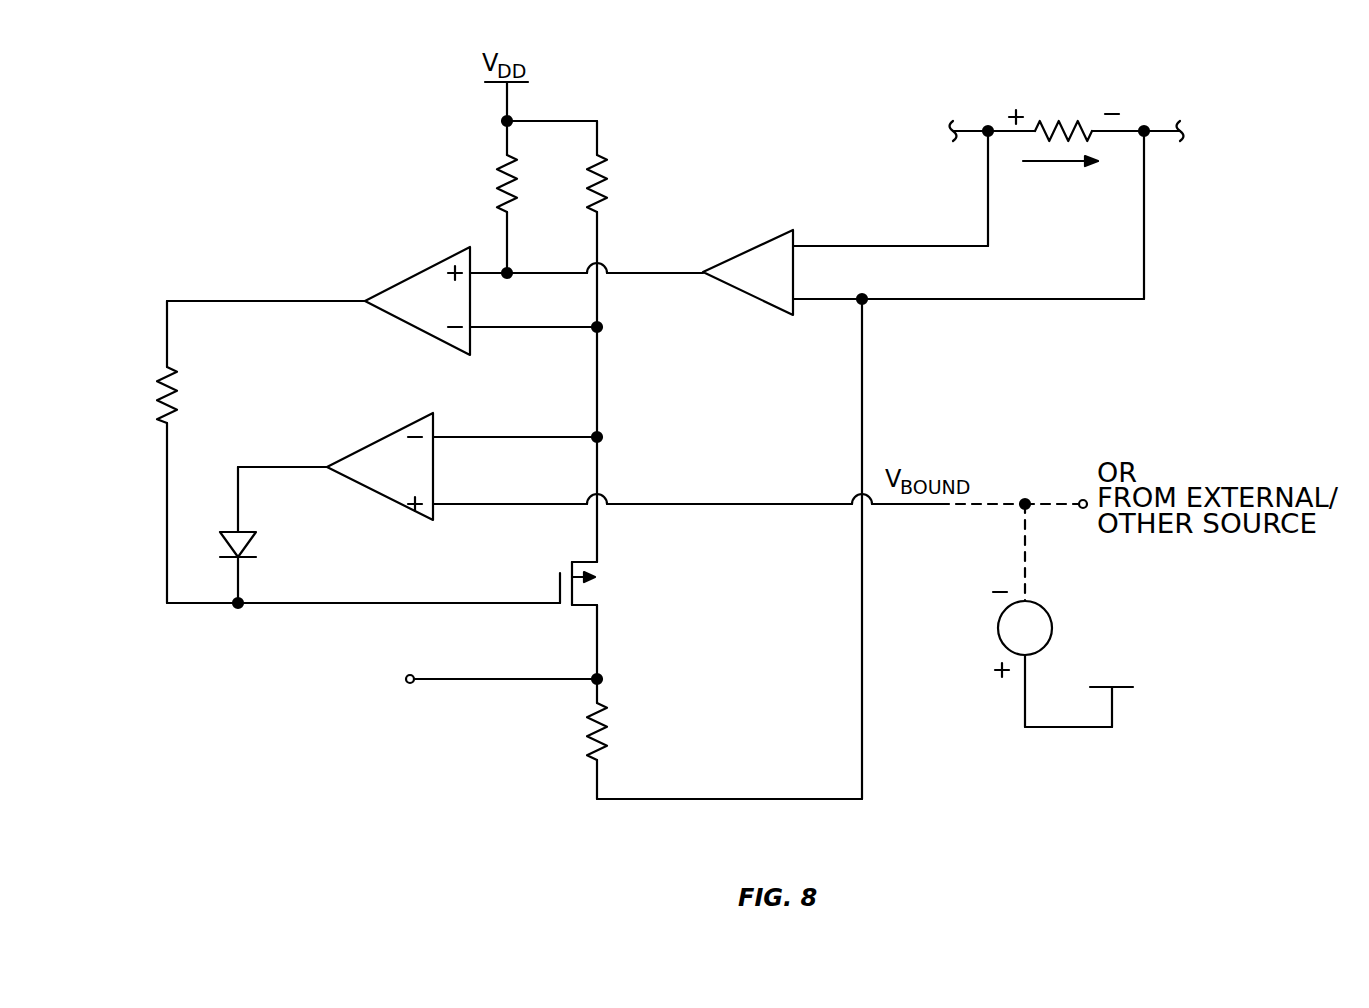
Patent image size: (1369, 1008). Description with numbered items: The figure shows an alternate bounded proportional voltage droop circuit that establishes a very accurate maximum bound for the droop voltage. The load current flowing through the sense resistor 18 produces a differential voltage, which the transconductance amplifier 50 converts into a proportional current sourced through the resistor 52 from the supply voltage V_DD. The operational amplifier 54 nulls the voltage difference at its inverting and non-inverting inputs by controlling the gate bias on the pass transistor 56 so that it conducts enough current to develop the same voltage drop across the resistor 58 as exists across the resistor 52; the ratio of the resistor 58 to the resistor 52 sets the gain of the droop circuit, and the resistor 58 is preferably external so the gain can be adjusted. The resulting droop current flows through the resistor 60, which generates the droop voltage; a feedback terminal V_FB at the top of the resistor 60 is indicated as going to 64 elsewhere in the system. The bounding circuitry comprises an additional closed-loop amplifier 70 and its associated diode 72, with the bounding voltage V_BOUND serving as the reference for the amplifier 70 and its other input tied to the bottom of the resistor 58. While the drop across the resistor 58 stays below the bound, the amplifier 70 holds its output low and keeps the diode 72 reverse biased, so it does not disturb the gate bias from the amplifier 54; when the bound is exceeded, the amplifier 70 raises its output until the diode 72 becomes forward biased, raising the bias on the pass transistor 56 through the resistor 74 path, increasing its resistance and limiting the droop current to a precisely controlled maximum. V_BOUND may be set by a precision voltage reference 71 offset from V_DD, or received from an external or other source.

The sense resistor 18 is at (1072, 113).
The transconductance amplifier 50 is at (764, 240).
The resistor 52 is at (516, 197).
The operational amplifier 54 is at (442, 343).
The pass transistor 56 is at (566, 568).
The resistor 58 is at (606, 197).
The resistor 60 is at (585, 748).
The feedback node (to 64) 64 is at (398, 692).
The closed-loop amplifier 70 is at (386, 502).
The precision voltage reference 71 is at (1044, 606).
The diode 72 is at (255, 548).
The resistor 74 is at (177, 408).